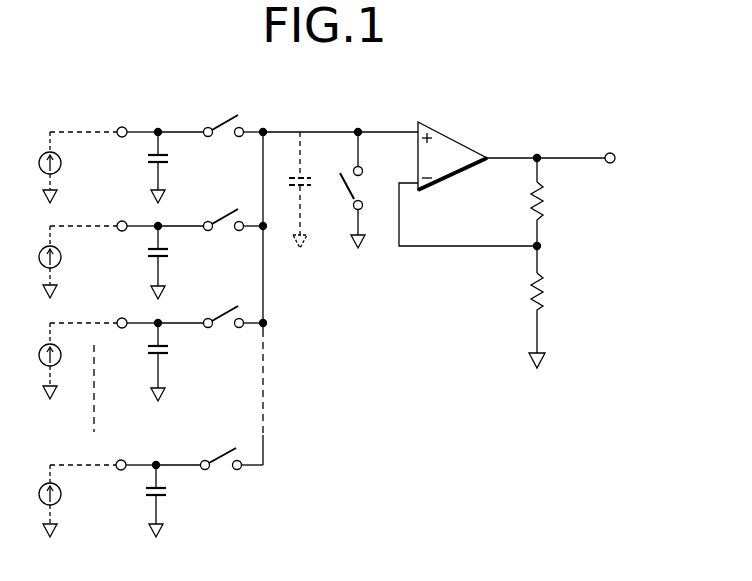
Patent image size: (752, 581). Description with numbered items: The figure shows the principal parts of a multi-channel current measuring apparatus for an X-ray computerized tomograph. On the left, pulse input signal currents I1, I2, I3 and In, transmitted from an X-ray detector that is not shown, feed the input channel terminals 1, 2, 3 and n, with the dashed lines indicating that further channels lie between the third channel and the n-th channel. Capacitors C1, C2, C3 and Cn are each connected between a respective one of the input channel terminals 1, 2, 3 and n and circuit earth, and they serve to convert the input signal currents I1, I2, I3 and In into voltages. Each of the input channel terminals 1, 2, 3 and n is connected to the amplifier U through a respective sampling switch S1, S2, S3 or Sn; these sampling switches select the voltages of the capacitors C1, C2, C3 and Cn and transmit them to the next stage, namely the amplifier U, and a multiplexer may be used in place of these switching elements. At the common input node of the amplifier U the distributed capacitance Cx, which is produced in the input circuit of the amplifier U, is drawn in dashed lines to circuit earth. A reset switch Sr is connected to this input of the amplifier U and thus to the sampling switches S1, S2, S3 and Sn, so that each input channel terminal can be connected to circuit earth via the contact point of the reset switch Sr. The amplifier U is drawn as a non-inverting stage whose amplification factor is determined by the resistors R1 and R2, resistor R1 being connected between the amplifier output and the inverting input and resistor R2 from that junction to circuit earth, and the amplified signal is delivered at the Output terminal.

The input channel terminal 1 is at (104, 118).
The input channel terminal 2 is at (104, 212).
The input channel terminal 3 is at (104, 309).
The input channel terminal n is at (103, 451).
The pulse input signal current I1 is at (58, 167).
The pulse input signal current I2 is at (58, 262).
The pulse input signal current I3 is at (58, 361).
The pulse input signal current In is at (58, 501).
The capacitor C1 is at (172, 166).
The capacitor C2 is at (172, 261).
The capacitor C3 is at (172, 361).
The capacitor Cn is at (170, 500).
The sampling switch S1 is at (212, 117).
The sampling switch S2 is at (212, 211).
The sampling switch S3 is at (212, 308).
The sampling switch Sn is at (209, 450).
The distributed capacitance Cx is at (291, 190).
The reset switch Sr is at (362, 189).
The amplifier U is at (527, 80).
The resistor R1 is at (550, 202).
The resistor R2 is at (549, 307).
The output Output is at (648, 159).